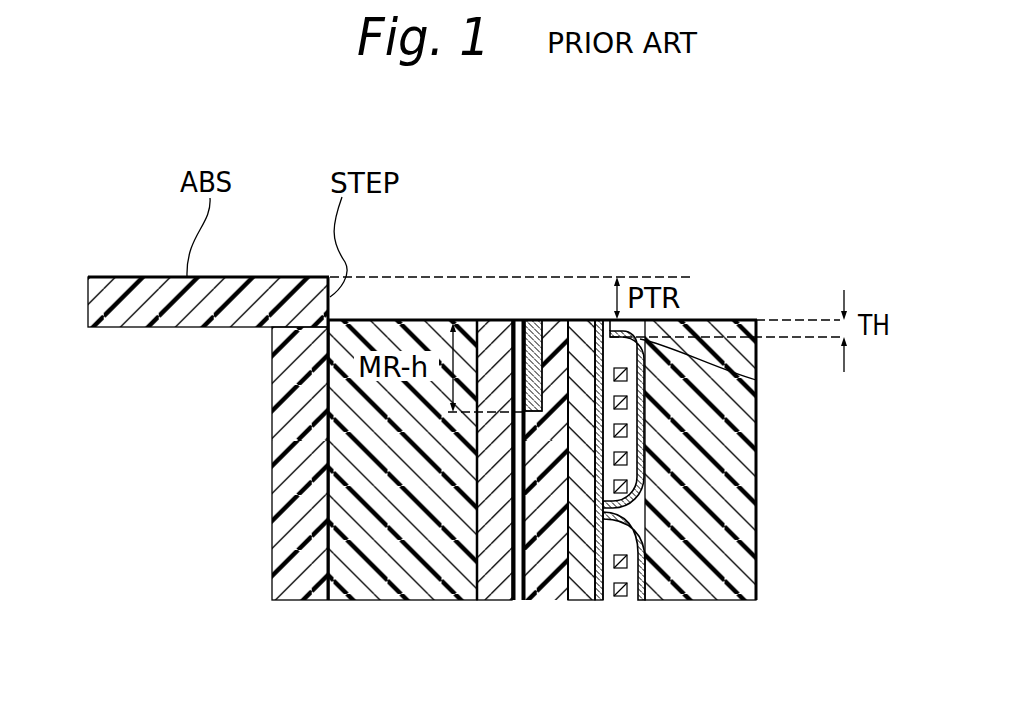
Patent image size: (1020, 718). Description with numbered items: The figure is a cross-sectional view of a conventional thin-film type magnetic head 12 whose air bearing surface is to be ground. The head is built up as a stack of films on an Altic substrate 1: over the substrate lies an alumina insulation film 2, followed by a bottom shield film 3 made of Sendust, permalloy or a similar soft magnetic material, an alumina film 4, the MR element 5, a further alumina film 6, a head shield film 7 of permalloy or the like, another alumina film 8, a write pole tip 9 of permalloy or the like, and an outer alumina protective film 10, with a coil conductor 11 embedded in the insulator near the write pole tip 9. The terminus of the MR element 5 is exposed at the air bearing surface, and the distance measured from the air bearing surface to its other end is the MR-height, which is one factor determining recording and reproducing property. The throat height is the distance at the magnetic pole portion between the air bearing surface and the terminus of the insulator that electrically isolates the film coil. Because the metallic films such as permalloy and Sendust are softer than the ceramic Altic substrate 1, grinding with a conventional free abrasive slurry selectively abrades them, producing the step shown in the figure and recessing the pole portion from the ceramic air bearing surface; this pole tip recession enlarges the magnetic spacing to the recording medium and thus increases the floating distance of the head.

The Altic substrate 1 is at (188, 407).
The alumina insulation film 2 is at (410, 505).
The bottom shield film 3 is at (492, 319).
The alumina film 4 is at (519, 319).
The MR element 5 is at (532, 319).
The alumina film 6 is at (553, 319).
The head shield film 7 is at (583, 319).
The alumina film 8 is at (640, 442).
The write pole tip 9 is at (756, 378).
The alumina protective film 10 is at (715, 503).
The coil conductor 11 is at (645, 556).
The thin-film type magnetic head 12 is at (741, 181).